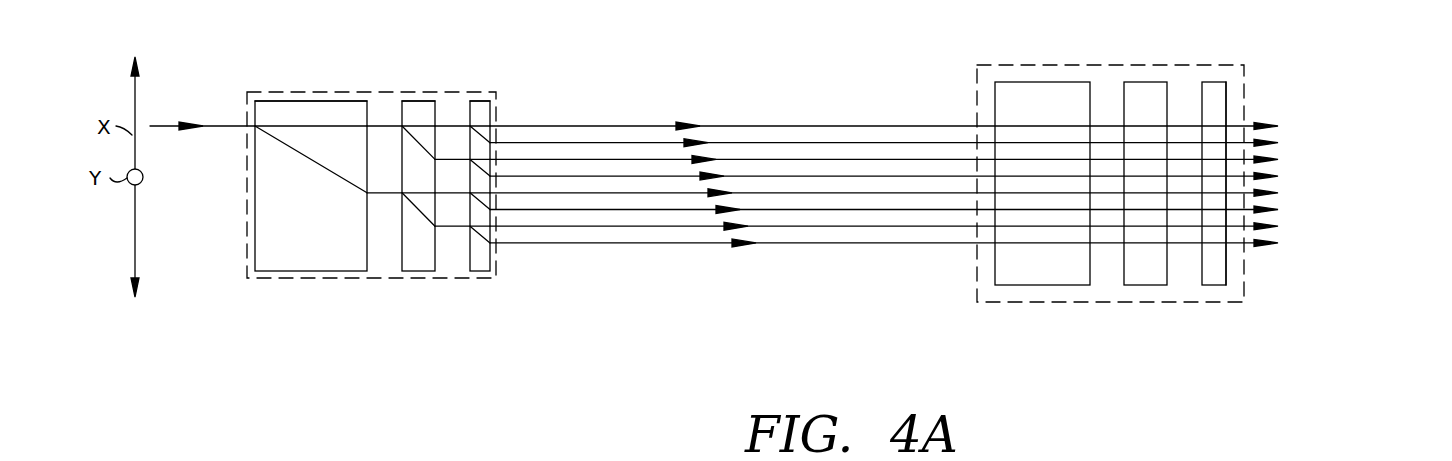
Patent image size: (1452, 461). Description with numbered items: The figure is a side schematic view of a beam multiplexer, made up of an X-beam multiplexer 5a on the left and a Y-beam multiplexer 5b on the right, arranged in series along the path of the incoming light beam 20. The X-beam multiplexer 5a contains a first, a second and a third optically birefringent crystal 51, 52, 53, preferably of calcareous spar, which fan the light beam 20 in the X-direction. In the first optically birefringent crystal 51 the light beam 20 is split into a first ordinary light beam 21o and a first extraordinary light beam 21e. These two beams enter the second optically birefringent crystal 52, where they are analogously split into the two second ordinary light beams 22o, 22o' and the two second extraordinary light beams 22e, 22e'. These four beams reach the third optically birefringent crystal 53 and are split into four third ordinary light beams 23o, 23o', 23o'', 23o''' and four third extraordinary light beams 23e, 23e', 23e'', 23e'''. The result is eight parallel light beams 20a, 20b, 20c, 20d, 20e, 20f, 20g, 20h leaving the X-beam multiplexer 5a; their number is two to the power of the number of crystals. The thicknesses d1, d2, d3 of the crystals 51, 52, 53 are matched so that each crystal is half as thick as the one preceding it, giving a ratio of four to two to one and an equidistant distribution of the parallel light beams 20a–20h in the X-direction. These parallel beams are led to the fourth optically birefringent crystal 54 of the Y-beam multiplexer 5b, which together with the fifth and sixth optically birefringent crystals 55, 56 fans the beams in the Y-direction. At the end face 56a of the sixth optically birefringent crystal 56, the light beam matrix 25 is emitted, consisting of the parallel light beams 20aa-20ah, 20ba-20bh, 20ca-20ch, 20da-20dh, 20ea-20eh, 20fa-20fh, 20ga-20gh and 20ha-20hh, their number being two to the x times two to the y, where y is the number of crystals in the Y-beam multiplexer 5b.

The light beam 20 is at (158, 125).
The first ordinary light beam 21o is at (272, 126).
The first extraordinary light beam 21e is at (270, 130).
The X-beam multiplexer 5a is at (321, 88).
The Y-beam multiplexer 5b is at (1086, 310).
The thickness of first optically birefringent crystal d1 is at (300, 101).
The thickness of second optically birefringent crystal d2 is at (403, 101).
The thickness of third optically birefringent crystal d3 is at (478, 101).
The first optically birefringent crystal 51 is at (297, 258).
The second optically birefringent crystal 52 is at (405, 272).
The third optically birefringent crystal 53 is at (478, 272).
The second ordinary light beam 22o is at (388, 73).
The second extraordinary light beam 22e is at (413, 99).
The second ordinary light beam 22o' is at (381, 256).
The second extraordinary light beam 22e' is at (406, 275).
The third ordinary light beam 23o is at (466, 87).
The third extraordinary light beam 23e is at (508, 91).
The third ordinary light beam 23o' is at (503, 112).
The third extraordinary light beam 23e' is at (519, 136).
The third ordinary light beam 23o'' is at (522, 257).
The third extraordinary light beam 23e'' is at (472, 277).
The third ordinary light beam 23o''' is at (499, 258).
The third extraordinary light beam 23e''' is at (504, 277).
The parallel light beam 20a is at (634, 126).
The parallel light beam 20b is at (652, 143).
The parallel light beam 20c is at (673, 159).
The parallel light beam 20d is at (640, 177).
The parallel light beam 20e is at (657, 194).
The parallel light beam 20f is at (677, 210).
The parallel light beam 20g is at (703, 227).
The parallel light beam 20h is at (733, 244).
The fourth optically birefringent crystal 54 is at (1027, 280).
The fifth optically birefringent crystal 55 is at (1145, 280).
The sixth optically birefringent crystal 56 is at (1213, 280).
The end face 56a is at (1232, 246).
The light beam matrix 25 is at (1260, 75).
The parallel light beams 20aa-20ah is at (1246, 118).
The parallel light beams 20ba-20bh is at (1246, 138).
The parallel light beams 20ca-20ch is at (1248, 158).
The parallel light beams 20da-20dh is at (1248, 174).
The parallel light beams 20ea-20eh is at (1248, 193).
The parallel light beams 20fa-20fh is at (1250, 211).
The parallel light beams 20ga-20gh is at (1248, 230).
The parallel light beams 20ha-20hh is at (1248, 248).